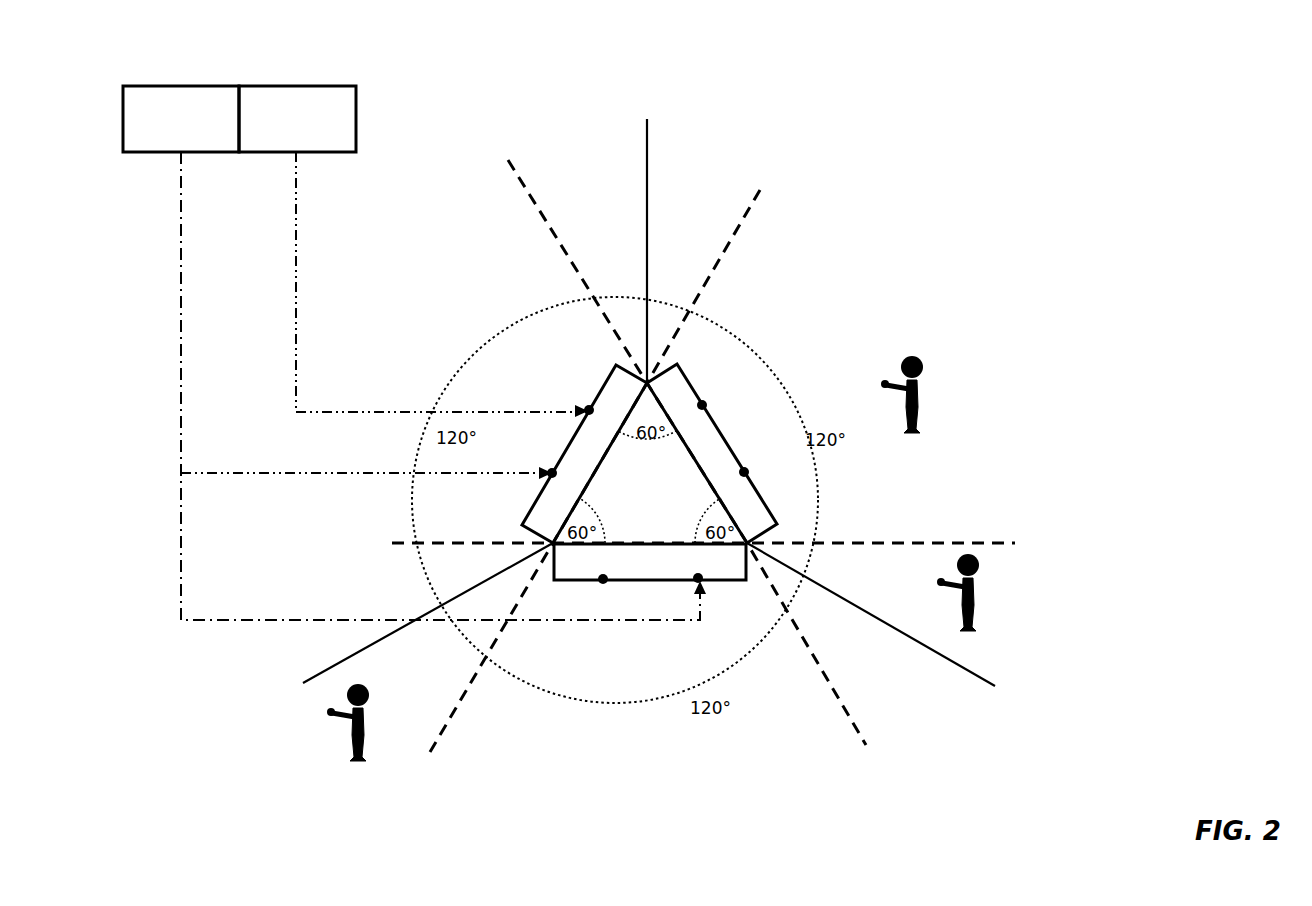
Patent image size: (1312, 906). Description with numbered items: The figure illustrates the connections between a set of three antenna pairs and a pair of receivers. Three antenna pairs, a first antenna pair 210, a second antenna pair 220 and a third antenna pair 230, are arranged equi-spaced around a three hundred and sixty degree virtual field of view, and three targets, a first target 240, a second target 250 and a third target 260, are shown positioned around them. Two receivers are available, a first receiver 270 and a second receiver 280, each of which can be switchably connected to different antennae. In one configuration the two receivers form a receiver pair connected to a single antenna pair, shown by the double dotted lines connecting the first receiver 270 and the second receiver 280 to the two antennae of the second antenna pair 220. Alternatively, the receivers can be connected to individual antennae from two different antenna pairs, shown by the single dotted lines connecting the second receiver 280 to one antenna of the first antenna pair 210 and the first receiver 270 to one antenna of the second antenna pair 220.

The antenna pair AP1 210 is at (575, 580).
The antenna pair AP2 220 is at (600, 391).
The antenna pair AP3 230 is at (690, 381).
The target T1 240 is at (918, 398).
The target T2 250 is at (977, 597).
The target T3 260 is at (331, 724).
The first receiver R1 270 is at (181, 119).
The second receiver R2 280 is at (297, 119).